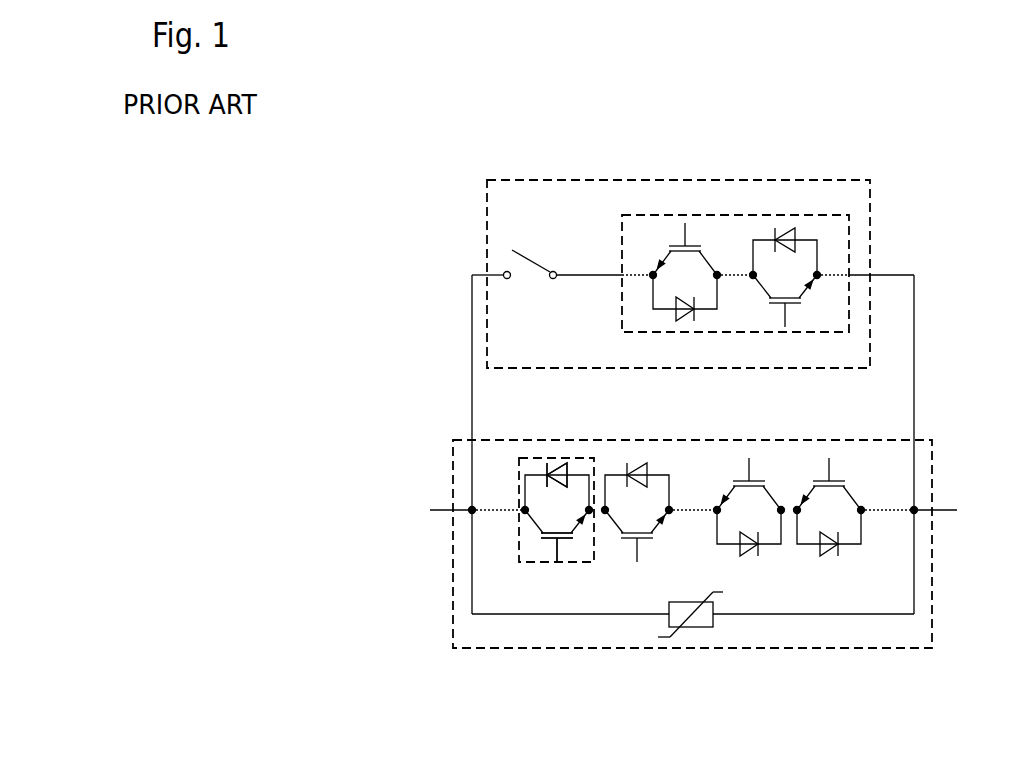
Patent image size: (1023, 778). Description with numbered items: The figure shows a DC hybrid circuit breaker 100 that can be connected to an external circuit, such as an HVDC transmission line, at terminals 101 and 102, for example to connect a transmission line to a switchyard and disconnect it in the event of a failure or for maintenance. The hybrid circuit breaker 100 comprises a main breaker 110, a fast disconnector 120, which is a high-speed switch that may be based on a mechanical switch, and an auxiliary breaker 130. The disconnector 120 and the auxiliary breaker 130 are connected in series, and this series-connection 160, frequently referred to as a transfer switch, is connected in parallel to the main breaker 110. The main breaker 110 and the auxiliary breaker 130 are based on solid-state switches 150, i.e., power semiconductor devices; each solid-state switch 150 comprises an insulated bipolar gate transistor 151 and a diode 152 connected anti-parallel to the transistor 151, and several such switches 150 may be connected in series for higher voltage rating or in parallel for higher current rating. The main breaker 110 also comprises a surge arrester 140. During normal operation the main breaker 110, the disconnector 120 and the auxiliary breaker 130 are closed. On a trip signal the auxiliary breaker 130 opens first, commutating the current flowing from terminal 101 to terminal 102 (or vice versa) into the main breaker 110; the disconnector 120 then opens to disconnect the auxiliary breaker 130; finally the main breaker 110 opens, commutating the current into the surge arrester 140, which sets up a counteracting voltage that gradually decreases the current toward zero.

The hybrid circuit breaker 100 is at (415, 761).
The terminal 101 is at (423, 507).
The terminal 102 is at (962, 507).
The main breaker 110 is at (690, 581).
The disconnector 120 is at (562, 248).
The auxiliary breaker 130 is at (710, 279).
The surge arrester 140 is at (696, 640).
The solid-state switch 150 is at (514, 562).
The insulated bipolar gate transistor 151 is at (552, 550).
The diode 152 is at (565, 494).
The series-connection 160 is at (650, 271).